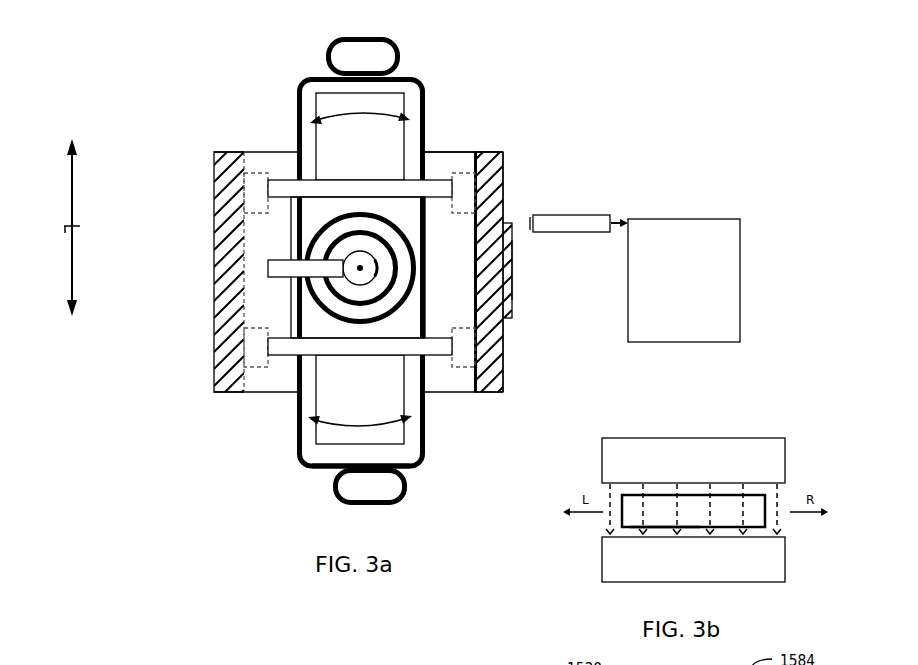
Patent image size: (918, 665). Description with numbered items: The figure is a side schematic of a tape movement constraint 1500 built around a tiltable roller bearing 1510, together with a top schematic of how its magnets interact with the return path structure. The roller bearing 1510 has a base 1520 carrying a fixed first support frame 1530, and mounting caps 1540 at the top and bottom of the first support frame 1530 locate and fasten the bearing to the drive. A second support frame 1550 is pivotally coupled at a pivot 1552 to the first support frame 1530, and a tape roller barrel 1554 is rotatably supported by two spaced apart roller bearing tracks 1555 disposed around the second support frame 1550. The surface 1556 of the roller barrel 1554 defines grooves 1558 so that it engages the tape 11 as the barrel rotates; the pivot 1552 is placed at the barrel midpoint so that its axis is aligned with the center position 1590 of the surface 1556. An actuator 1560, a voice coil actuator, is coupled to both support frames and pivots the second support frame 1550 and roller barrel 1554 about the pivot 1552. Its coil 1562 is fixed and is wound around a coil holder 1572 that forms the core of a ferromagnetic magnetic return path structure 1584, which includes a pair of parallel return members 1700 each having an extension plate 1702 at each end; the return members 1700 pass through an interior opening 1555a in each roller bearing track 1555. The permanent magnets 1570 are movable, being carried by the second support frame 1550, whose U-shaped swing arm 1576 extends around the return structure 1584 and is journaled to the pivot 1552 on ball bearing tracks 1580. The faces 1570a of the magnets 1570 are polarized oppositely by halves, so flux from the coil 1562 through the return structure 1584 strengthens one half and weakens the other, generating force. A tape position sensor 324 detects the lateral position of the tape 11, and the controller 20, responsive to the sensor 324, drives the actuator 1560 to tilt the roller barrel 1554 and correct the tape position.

In FIG. 3a, the tiltable roller bearing 1510 is at (166, 158).
In FIG. 3a, the interior opening 1555a is at (244, 173).
In FIG. 3a, the tape roller barrel 1554 is at (495, 152).
In FIG. 3a, the center position 1590 is at (505, 270).
In FIG. 3a, the tape 11 is at (513, 262).
In FIG. 3a, the surface of the roller barrel 1556 is at (503, 177).
In FIG. 3a, the grooves 1558 is at (504, 377).
In FIG. 3a, the roller bearing tracks 1555 is at (255, 200).
In FIG. 3a, the actuator 1560 is at (298, 88).
In FIG. 3a, the magnetic return path structure 1584 is at (308, 77).
In FIG. 3b, the magnetic return path structure 1584 is at (763, 440).
In FIG. 3a, the parallel return members 1700 is at (427, 118).
In FIG. 3a, the base 1520 is at (295, 462).
In FIG. 3a, the mounting caps 1540 is at (386, 47).
In FIG. 3a, the permanent magnets 1570 is at (392, 98).
In FIG. 3b, the permanent magnets 1570 is at (758, 497).
In FIG. 3a, the first support frame 1530 is at (413, 416).
In FIG. 3a, the second support frame 1550 is at (281, 179).
In FIG. 3a, the pivot 1552 is at (342, 280).
In FIG. 3a, the coil 1562 is at (318, 241).
In FIG. 3a, the ball bearing tracks 1580 is at (352, 288).
In FIG. 3a, the coil holder 1572 is at (368, 242).
In FIG. 3a, the swing arm 1576 is at (280, 272).
In FIG. 3a, the tape position sensor 324 is at (592, 214).
In FIG. 3a, the controller 20 is at (727, 219).
In FIG. 3a, the tape movement constraint 1500 is at (638, 150).
In FIG. 3b, the extension plate 1702 is at (620, 484).
In FIG. 3b, the faces of the magnets 1570a is at (660, 526).